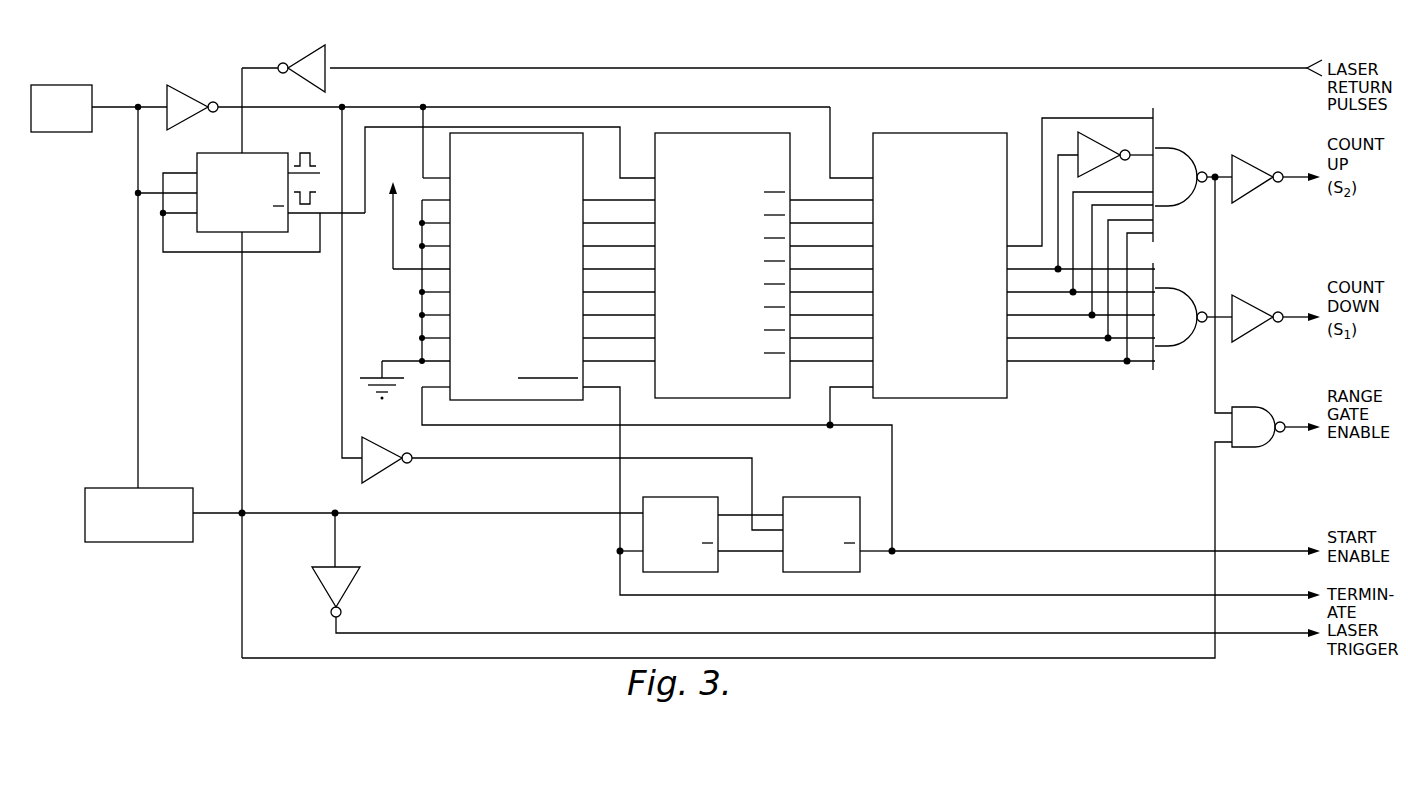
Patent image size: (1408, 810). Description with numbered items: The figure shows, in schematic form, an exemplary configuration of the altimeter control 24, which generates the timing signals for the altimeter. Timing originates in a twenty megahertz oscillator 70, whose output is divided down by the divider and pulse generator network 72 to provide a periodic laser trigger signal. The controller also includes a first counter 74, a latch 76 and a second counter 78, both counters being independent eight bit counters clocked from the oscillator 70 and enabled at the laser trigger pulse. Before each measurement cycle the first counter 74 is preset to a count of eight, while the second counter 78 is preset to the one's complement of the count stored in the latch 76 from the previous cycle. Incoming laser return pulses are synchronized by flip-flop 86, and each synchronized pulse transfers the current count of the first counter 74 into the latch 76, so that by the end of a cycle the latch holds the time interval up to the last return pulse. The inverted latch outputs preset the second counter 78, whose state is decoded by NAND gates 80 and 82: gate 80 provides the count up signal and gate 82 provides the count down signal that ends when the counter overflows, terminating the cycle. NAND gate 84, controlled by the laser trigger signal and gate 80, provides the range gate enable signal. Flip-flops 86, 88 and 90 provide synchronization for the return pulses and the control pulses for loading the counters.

The altimeter control 24 is at (785, 59).
The oscillator 70 is at (50, 86).
The divider and pulse generator network 72 is at (150, 488).
The first counter 74 is at (585, 150).
The latch 76 is at (792, 152).
The second counter 78 is at (930, 133).
The NAND gate 80 is at (1193, 170).
The NAND gate 82 is at (1183, 292).
The NAND gate 84 is at (1268, 410).
The flip-flop 86 is at (262, 153).
The flip-flop 88 is at (688, 497).
The flip-flop 90 is at (808, 497).